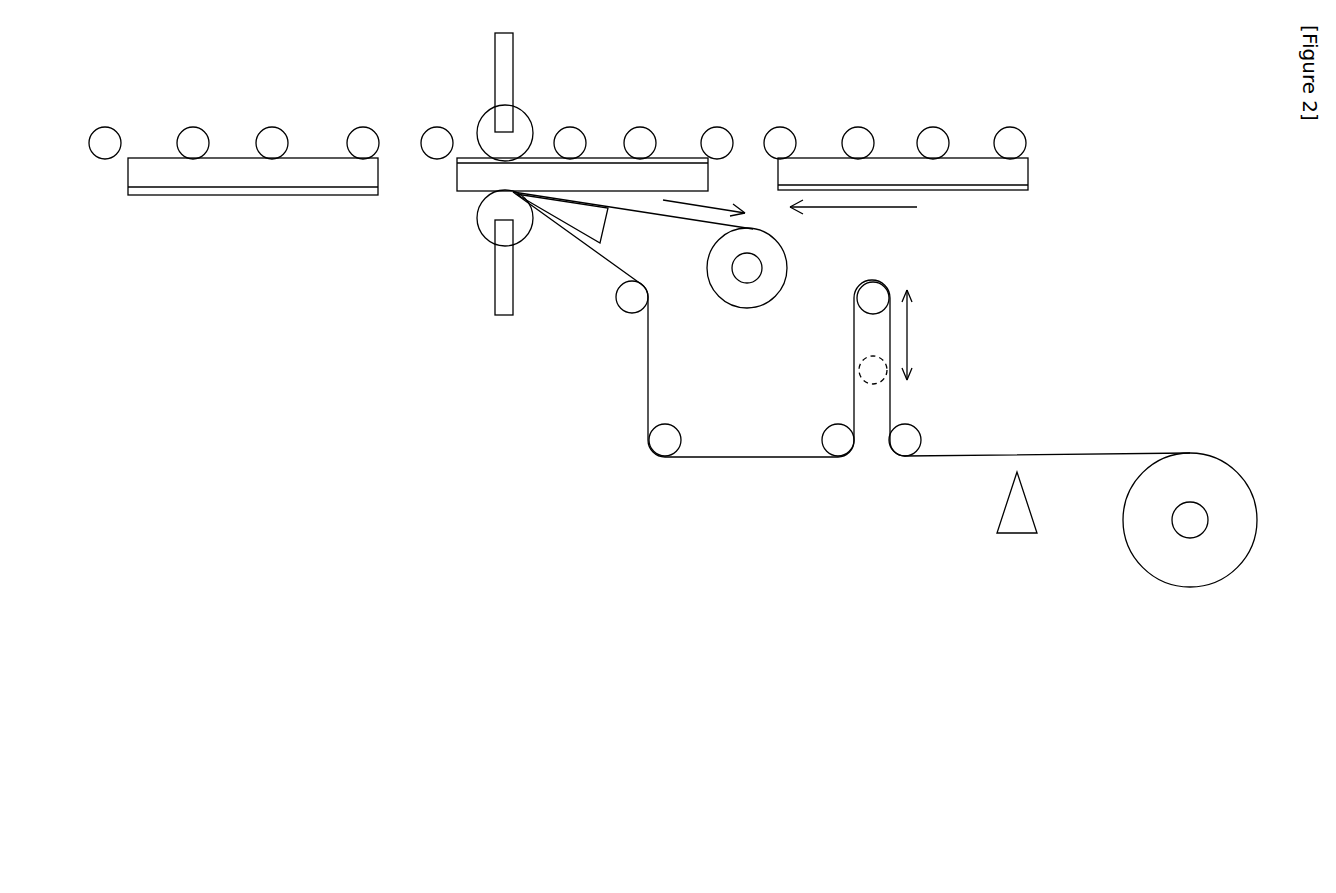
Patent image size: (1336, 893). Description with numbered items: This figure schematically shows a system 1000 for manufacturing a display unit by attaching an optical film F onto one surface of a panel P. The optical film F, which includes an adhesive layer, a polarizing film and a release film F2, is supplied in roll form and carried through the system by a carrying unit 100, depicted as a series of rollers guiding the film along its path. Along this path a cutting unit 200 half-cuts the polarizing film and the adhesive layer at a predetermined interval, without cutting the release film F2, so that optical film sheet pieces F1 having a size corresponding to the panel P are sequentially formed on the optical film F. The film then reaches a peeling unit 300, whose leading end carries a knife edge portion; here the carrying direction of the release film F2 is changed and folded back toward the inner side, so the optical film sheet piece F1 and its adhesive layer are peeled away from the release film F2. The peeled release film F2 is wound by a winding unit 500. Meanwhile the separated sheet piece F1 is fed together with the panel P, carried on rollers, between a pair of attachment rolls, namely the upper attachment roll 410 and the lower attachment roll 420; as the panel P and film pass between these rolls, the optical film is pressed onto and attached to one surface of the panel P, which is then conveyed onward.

The system for manufacturing a display unit 1000 is at (567, 530).
The carrying unit 100 is at (637, 303).
The cutting unit 200 is at (1010, 490).
The peeling unit 300 is at (581, 220).
The upper attachment roll 410 is at (479, 217).
The lower attachment roll 420 is at (480, 131).
The winding unit 500 is at (757, 268).
The panel P is at (143, 171).
The optical film F is at (738, 458).
The optical film sheet piece F1 is at (325, 196).
The release film F2 is at (663, 218).